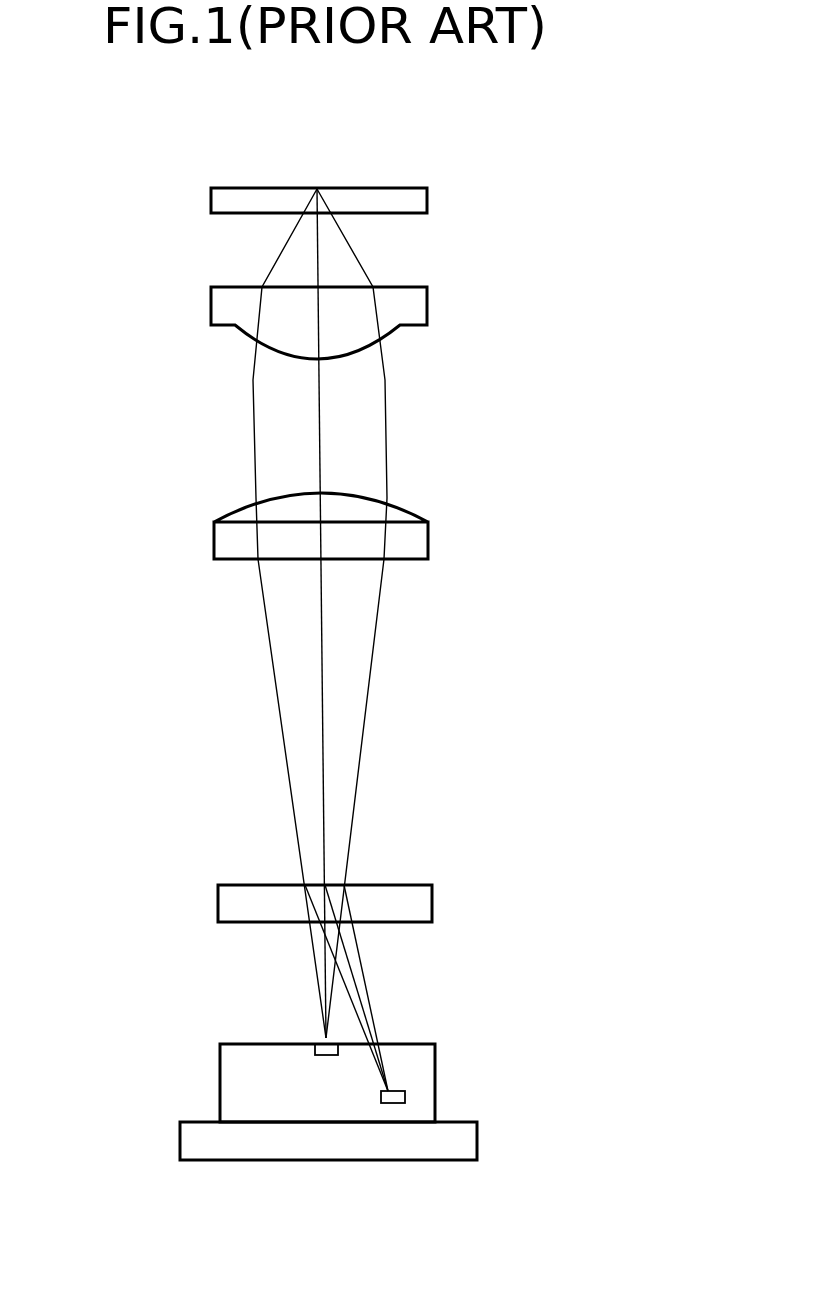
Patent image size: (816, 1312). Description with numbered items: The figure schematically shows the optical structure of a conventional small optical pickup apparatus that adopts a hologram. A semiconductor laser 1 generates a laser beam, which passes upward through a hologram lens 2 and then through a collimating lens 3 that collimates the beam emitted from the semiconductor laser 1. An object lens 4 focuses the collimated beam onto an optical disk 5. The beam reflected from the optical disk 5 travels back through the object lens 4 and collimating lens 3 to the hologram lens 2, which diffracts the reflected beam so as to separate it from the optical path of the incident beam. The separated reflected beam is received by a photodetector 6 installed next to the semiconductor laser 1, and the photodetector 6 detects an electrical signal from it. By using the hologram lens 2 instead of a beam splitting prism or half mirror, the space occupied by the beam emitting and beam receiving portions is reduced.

The semiconductor laser 1 is at (317, 1047).
The hologram lens 2 is at (433, 903).
The collimating lens 3 is at (429, 544).
The object lens 4 is at (427, 306).
The optical disk 5 is at (427, 201).
The photodetector 6 is at (405, 1098).